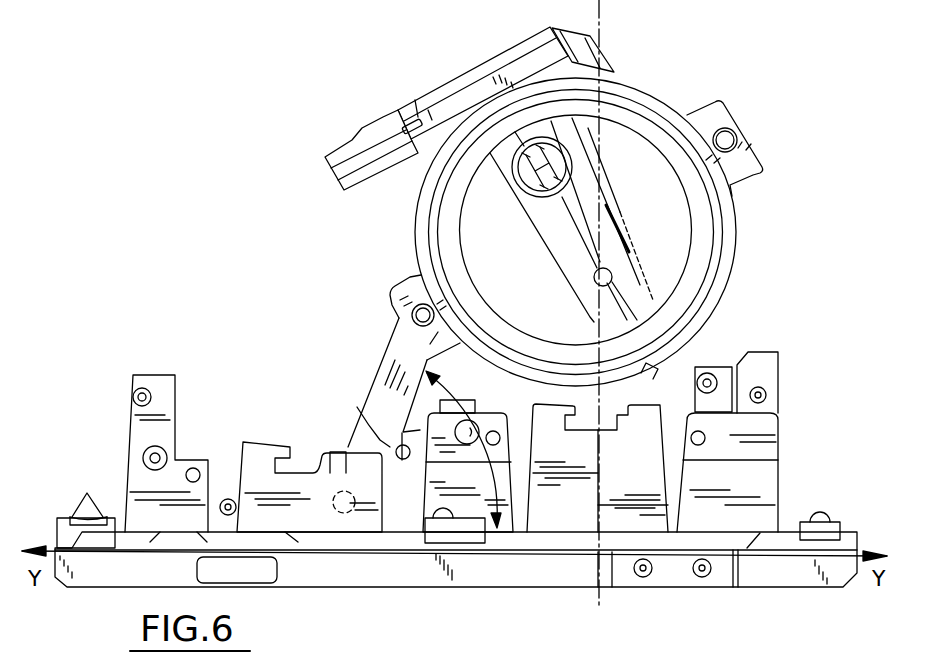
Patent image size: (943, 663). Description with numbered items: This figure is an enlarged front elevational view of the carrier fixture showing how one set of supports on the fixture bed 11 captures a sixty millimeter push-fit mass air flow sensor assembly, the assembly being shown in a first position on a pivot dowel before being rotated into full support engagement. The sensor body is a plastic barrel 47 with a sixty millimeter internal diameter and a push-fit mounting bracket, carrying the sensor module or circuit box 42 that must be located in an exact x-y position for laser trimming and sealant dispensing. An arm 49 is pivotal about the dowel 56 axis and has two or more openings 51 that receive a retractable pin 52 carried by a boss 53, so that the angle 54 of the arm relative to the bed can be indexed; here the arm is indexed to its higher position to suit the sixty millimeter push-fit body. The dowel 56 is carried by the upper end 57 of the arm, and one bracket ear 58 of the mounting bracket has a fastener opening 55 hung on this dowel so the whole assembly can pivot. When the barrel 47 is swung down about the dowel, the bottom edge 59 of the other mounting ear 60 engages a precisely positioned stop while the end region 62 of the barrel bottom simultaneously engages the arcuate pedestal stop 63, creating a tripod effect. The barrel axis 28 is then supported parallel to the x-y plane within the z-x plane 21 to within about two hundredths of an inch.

The fixture bed 11 is at (130, 573).
The z-x plane 21 is at (612, 118).
The barrel axis 28 is at (584, 224).
The circuit box 42 is at (478, 70).
The plastic barrel 47 is at (747, 218).
The arm 49 is at (398, 347).
The openings 51 is at (396, 440).
The retractable pin 52 is at (380, 444).
The boss 53 is at (402, 478).
The angle 54 is at (497, 452).
The fastener opening 55 is at (414, 317).
The dowel 56 is at (413, 315).
The upper end 57 is at (430, 333).
The bracket ear 58 is at (404, 283).
The bottom edge 59 is at (753, 173).
The mounting ear 60 is at (750, 140).
The end region 62 is at (705, 337).
The arcuate pedestal stop 63 is at (545, 407).